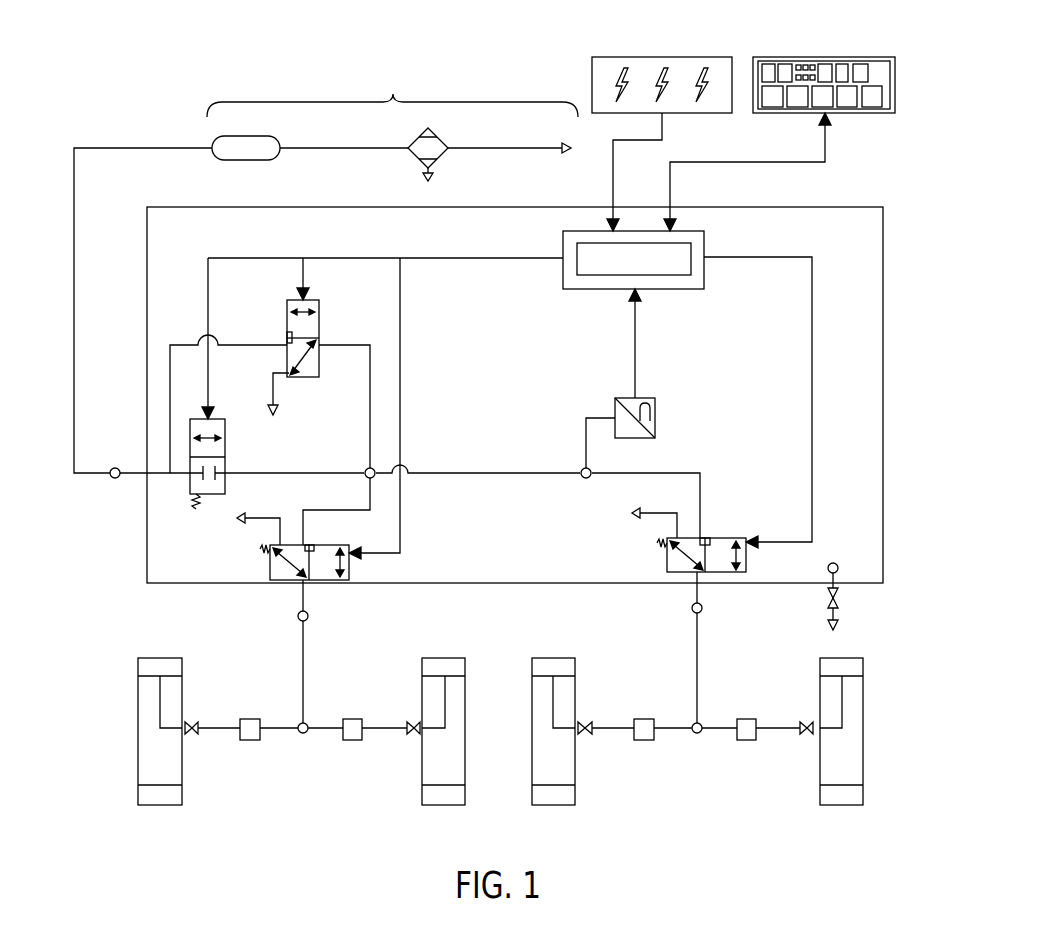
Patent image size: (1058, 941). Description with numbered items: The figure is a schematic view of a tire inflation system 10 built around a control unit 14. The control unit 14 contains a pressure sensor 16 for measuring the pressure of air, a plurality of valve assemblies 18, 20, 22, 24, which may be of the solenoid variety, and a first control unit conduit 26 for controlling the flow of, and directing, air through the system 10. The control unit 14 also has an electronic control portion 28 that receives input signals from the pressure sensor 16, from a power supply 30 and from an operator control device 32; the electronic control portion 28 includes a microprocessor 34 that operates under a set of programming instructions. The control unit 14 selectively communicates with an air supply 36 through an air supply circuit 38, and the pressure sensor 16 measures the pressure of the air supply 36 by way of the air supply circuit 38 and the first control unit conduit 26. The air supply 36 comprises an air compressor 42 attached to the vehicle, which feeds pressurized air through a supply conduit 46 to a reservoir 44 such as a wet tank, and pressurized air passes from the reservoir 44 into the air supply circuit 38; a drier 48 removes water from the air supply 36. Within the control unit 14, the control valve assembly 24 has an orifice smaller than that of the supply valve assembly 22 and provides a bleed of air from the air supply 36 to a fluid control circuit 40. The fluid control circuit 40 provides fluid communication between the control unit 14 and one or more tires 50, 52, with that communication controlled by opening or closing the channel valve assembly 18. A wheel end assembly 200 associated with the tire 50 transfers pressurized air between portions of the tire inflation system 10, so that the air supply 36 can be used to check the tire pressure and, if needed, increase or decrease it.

The tire inflation system 10 is at (903, 156).
The control unit 14 is at (872, 247).
The pressure sensor 16 is at (615, 405).
The channel valve assembly 18 is at (270, 562).
The valve assembly 20 is at (667, 557).
The supply valve assembly 22 is at (226, 420).
The control valve assembly 24 is at (320, 362).
The first control unit conduit 26 is at (496, 470).
The electronic control portion 28 is at (634, 256).
The power supply 30 is at (660, 57).
The operator control device 32 is at (818, 57).
The microprocessor 34 is at (693, 249).
The air supply 36 is at (393, 94).
The air supply circuit 38 is at (74, 313).
The fluid control circuit 40 is at (302, 651).
The air compressor 42 is at (546, 150).
The reservoir 44 is at (244, 160).
The supply conduit 46 is at (350, 149).
The drier 48 is at (436, 152).
The tire 50 is at (157, 658).
The tire 52 is at (447, 658).
The wheel end assembly 200 is at (248, 742).